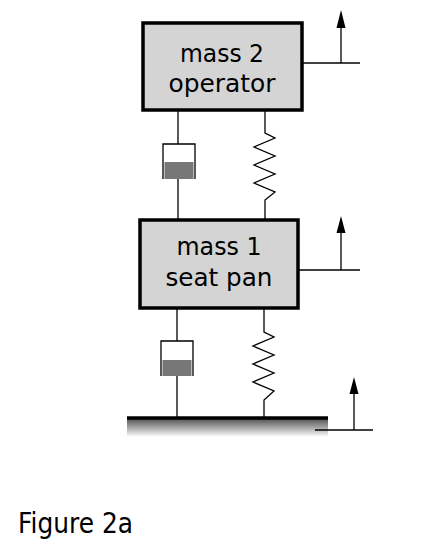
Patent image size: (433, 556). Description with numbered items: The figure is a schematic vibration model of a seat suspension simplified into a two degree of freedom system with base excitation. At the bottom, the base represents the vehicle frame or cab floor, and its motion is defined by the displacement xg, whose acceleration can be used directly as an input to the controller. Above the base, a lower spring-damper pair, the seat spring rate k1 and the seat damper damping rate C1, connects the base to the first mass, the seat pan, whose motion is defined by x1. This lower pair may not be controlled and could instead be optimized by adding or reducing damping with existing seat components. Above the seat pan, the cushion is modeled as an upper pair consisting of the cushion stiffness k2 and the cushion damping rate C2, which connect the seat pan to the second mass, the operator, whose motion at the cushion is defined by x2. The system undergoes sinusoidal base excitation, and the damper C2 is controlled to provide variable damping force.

The cushion damping rate C2 is at (143, 165).
The cushion stiffness k2 is at (293, 165).
The seat damper damping rate C1 is at (142, 363).
The seat spring rate k1 is at (293, 363).
The operator motion x2 is at (350, 32).
The seat motion x1 is at (351, 241).
The base motion xg is at (365, 392).